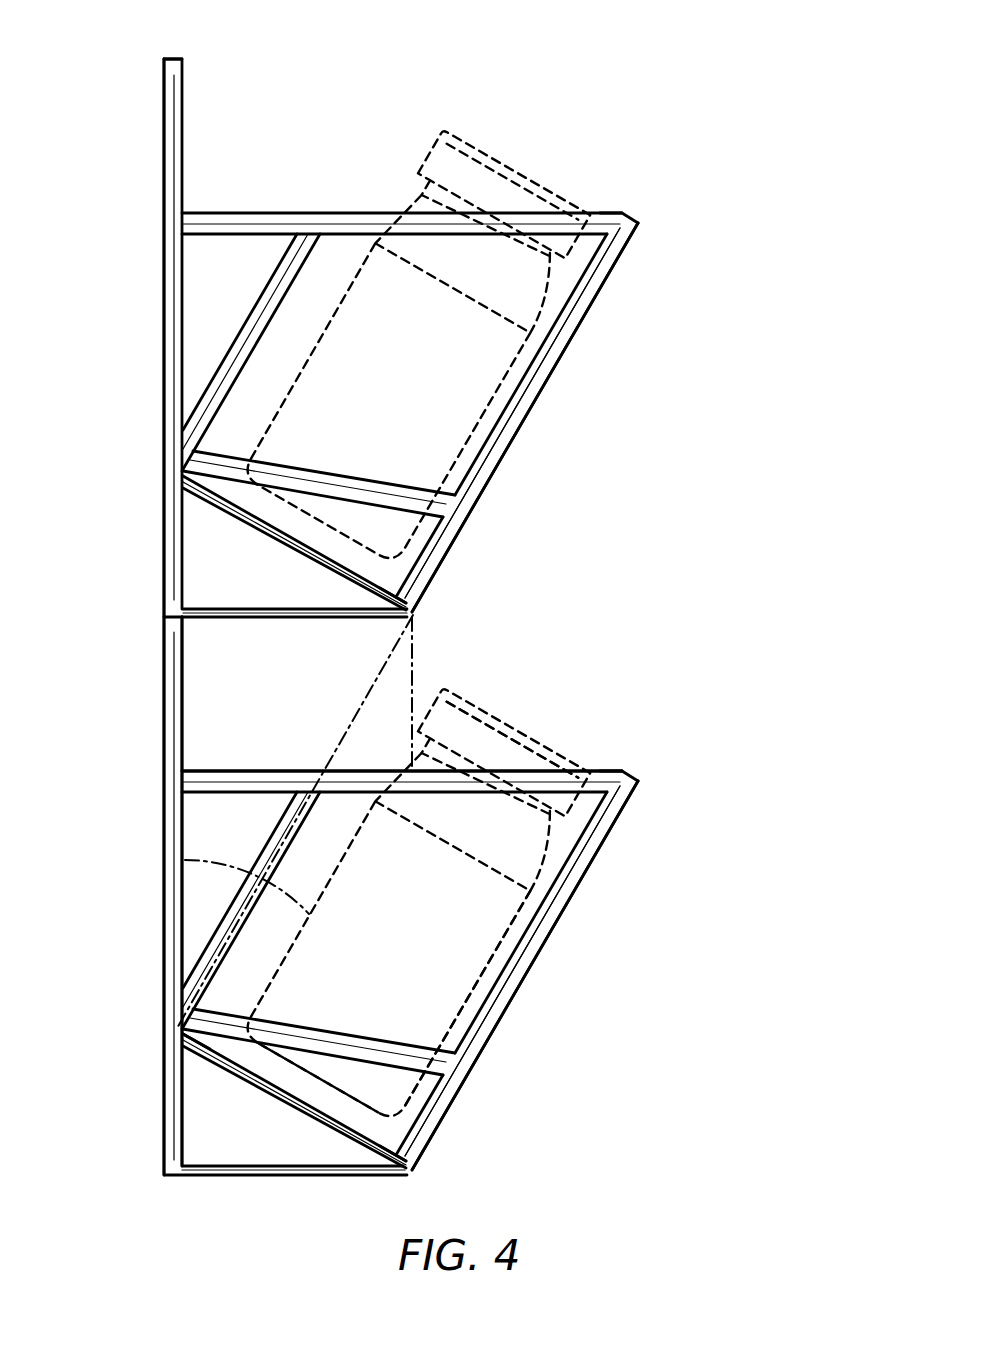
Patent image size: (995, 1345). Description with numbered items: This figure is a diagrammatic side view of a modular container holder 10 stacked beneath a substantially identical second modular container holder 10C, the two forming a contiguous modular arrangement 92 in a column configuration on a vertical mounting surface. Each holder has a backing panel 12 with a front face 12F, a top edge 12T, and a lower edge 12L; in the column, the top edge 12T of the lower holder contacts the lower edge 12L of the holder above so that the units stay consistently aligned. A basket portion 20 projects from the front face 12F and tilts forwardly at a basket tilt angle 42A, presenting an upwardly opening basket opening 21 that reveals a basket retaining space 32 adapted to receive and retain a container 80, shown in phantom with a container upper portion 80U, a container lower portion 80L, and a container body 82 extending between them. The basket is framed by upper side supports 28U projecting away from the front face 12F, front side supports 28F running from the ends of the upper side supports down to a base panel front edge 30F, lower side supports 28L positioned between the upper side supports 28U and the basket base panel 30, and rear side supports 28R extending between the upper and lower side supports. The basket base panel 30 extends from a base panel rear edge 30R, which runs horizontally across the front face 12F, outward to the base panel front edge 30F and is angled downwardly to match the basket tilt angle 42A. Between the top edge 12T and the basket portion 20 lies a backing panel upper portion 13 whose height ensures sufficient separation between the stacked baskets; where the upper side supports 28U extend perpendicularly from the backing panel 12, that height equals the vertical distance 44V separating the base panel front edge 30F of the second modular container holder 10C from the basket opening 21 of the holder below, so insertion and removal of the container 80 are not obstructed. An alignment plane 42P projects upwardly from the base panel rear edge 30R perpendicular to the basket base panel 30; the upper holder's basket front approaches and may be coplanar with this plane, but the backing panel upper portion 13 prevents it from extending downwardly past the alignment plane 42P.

The modular container holder 10 is at (496, 1154).
The second modular container holder 10C is at (573, 512).
The backing panel 12 is at (182, 110).
The top edge 12T is at (183, 58).
The lower edge 12L is at (182, 604).
The front face 12F is at (182, 843).
The backing panel upper portion 13 is at (182, 760).
The basket portion 20 is at (638, 222).
The basket opening 21 is at (532, 210).
The upper side support 28U is at (370, 780).
The front side support 28F is at (601, 312).
The lower side support 28L is at (421, 493).
The rear side support 28R is at (287, 862).
The basket base panel 30 is at (307, 1110).
The base panel front edge 30F is at (416, 608).
The base panel rear edge 30R is at (183, 1038).
The basket retaining space 32 is at (516, 409).
The alignment plane 42P is at (387, 662).
The basket tilt angle 42A is at (222, 870).
The vertical distance 44V is at (414, 678).
The container 80 is at (600, 746).
The container upper portion 80U is at (521, 726).
The container lower portion 80L is at (343, 1115).
The container body 82 is at (482, 940).
The contiguous modular arrangement 92 is at (103, 360).